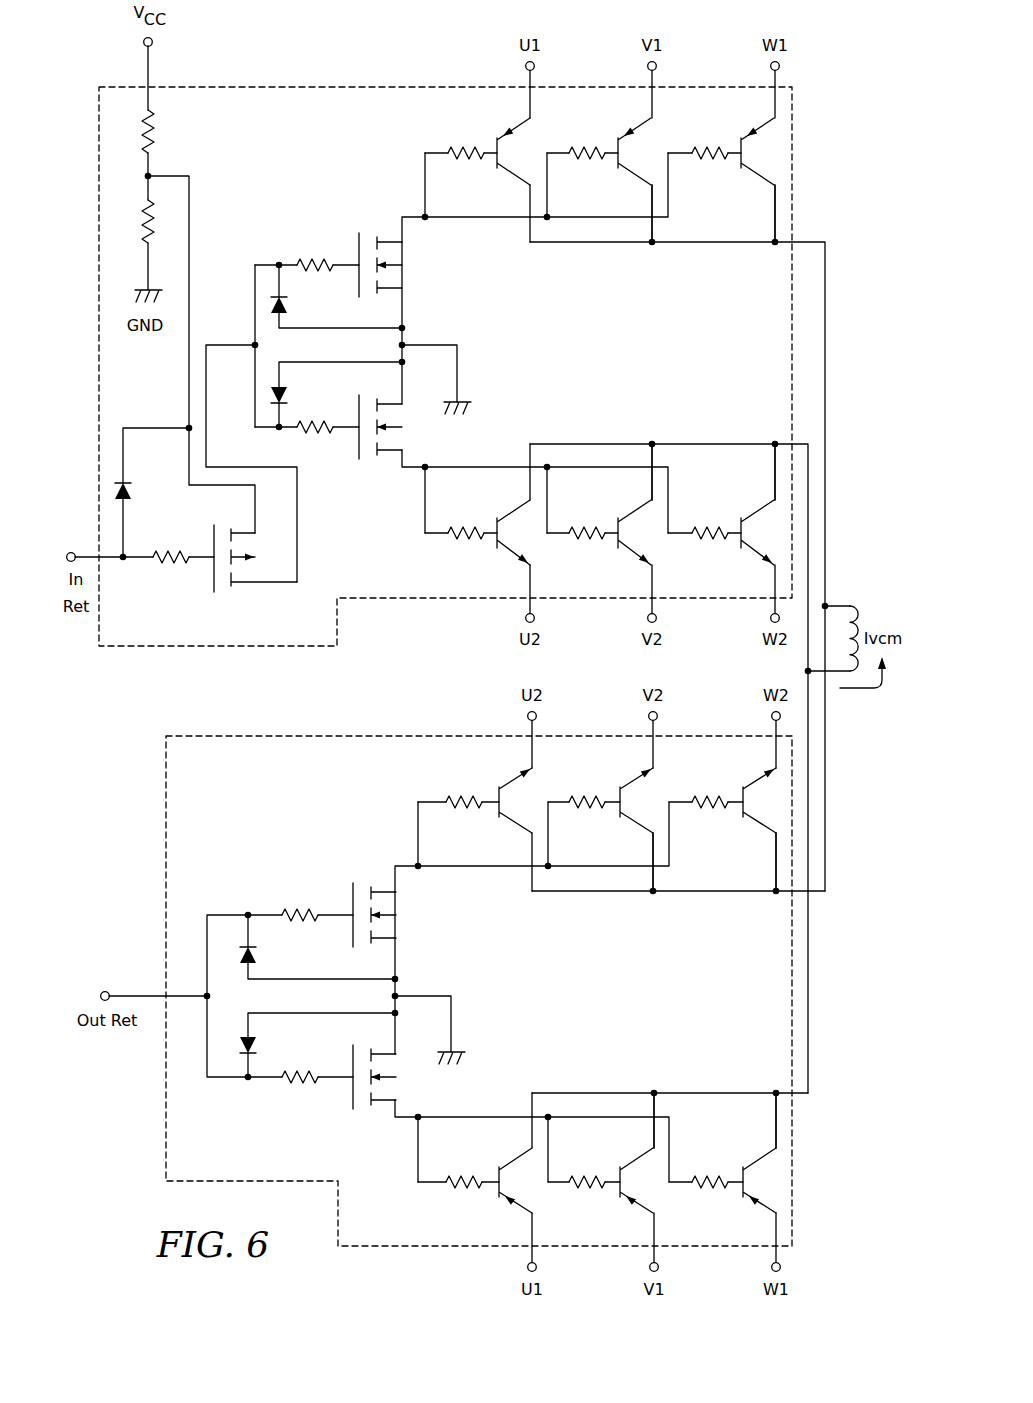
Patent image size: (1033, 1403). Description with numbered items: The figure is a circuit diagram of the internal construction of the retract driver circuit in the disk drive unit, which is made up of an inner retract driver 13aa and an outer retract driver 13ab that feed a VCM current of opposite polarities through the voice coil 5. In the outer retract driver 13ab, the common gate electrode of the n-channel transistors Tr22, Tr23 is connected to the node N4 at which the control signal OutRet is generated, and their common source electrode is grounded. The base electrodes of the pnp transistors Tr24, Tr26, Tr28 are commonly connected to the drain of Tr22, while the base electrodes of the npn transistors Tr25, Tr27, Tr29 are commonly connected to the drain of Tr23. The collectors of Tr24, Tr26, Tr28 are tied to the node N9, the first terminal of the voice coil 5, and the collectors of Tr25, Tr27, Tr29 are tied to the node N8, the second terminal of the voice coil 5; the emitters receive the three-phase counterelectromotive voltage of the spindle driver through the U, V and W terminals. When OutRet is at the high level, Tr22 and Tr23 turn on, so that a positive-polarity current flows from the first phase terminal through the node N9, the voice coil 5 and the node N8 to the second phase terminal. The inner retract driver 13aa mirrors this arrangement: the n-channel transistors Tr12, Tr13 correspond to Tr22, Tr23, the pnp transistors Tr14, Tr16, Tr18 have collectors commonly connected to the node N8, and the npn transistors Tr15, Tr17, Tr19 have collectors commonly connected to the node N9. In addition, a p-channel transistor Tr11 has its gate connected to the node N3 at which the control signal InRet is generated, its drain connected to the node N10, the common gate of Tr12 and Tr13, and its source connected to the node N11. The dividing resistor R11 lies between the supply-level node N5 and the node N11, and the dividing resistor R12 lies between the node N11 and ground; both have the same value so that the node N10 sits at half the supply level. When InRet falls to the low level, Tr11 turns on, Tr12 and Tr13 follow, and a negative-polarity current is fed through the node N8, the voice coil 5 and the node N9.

The voice coil 5 is at (852, 607).
The inner retract driver 13aa is at (141, 648).
The outer retract driver 13ab is at (243, 735).
The node N3 is at (93, 548).
The node N4 is at (150, 985).
The node N5 is at (165, 75).
The node N8 is at (835, 595).
The node N9 is at (815, 680).
The node N10 is at (250, 352).
The node N11 is at (208, 247).
The dividing resistor R11 is at (130, 131).
The dividing resistor R12 is at (130, 221).
The p-channel transistor Tr11 is at (251, 574).
The n-channel transistor Tr12 is at (386, 249).
The n-channel transistor Tr13 is at (386, 444).
The pnp transistor Tr14 is at (479, 152).
The npn transistor Tr15 is at (479, 533).
The pnp transistor Tr16 is at (601, 152).
The npn transistor Tr17 is at (601, 533).
The pnp transistor Tr18 is at (723, 152).
The npn transistor Tr19 is at (723, 533).
The n-channel transistor Tr22 is at (381, 1092).
The n-channel transistor Tr23 is at (381, 901).
The pnp transistor Tr24 is at (477, 1182).
The npn transistor Tr25 is at (477, 801).
The pnp transistor Tr26 is at (603, 1182).
The npn transistor Tr27 is at (602, 801).
The pnp transistor Tr28 is at (724, 1182).
The npn transistor Tr29 is at (724, 801).